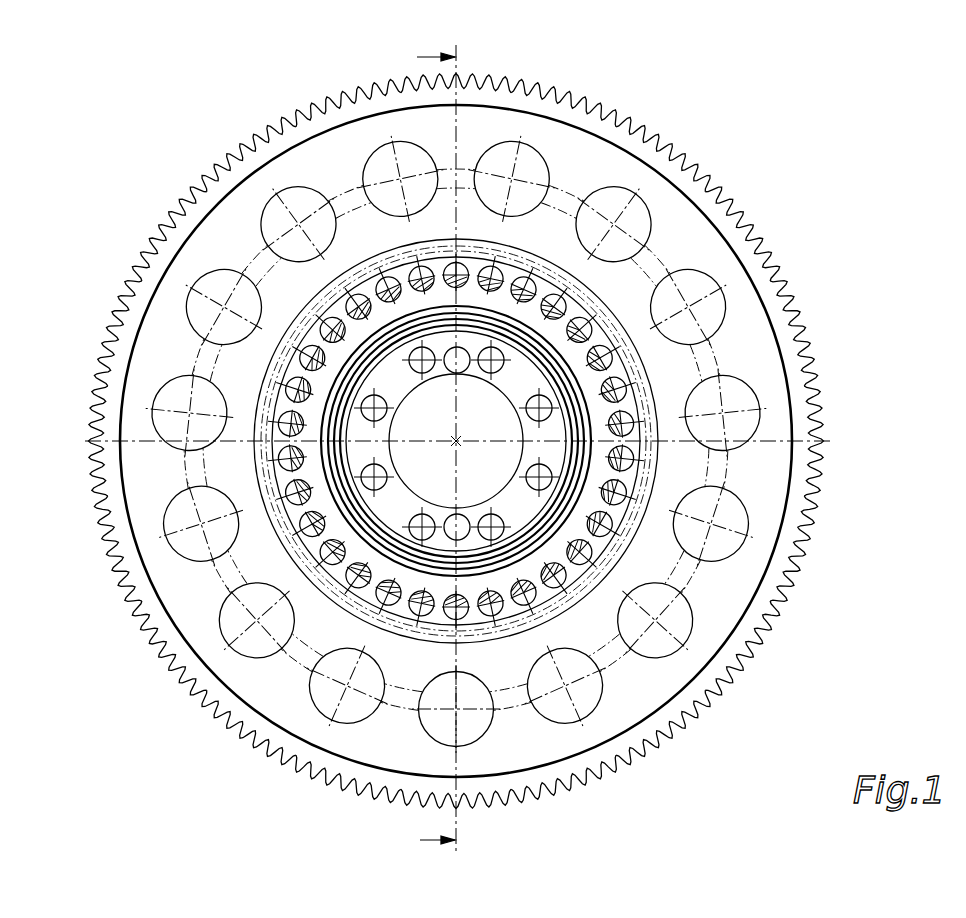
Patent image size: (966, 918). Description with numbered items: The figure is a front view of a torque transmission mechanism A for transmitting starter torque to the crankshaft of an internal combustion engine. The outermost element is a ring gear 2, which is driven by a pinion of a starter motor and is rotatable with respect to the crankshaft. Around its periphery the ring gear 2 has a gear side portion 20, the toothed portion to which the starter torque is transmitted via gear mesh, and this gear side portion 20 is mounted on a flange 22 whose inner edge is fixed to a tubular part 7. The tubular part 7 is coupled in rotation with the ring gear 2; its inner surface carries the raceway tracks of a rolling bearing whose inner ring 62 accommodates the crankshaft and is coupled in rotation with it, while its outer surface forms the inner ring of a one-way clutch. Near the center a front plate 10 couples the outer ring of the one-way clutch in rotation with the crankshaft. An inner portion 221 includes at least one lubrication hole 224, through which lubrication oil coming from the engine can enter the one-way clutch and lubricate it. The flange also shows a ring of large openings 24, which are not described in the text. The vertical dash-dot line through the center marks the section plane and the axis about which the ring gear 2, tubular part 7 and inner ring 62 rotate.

The ring gear 2 is at (492, 452).
The tubular part 7 is at (577, 560).
The front plate 10 is at (388, 505).
The gear side portion 20 is at (552, 92).
The flange 22 is at (688, 233).
The lightening holes 24 is at (258, 268).
The inner ring 62 is at (493, 560).
The inner portion 221 is at (628, 483).
The lubrication hole 224 is at (609, 532).
The torque transmission mechanism A is at (745, 130).